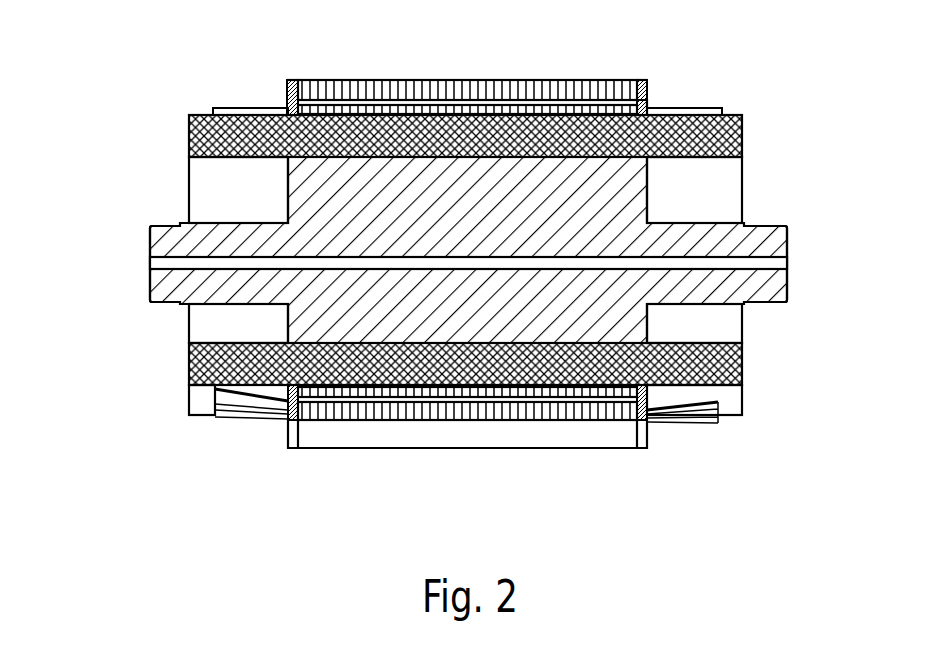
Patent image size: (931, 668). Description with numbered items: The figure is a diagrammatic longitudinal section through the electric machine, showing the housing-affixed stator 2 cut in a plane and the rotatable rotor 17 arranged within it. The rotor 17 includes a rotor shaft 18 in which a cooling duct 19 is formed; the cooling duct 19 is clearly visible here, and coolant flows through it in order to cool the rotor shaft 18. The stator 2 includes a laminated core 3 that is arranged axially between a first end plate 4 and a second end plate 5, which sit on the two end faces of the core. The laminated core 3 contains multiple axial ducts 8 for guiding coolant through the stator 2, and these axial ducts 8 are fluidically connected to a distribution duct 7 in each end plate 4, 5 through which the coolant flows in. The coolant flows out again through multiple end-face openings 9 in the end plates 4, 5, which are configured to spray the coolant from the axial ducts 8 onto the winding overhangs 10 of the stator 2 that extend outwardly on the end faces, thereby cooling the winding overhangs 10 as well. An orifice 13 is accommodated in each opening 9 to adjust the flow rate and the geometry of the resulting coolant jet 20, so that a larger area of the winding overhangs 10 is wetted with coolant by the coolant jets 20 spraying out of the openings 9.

The stator 2 is at (467, 270).
The laminated core 3 is at (467, 270).
The first end plate 4 is at (292, 81).
The second end plate 5 is at (646, 82).
The distribution duct 7 is at (286, 82).
The axial ducts 8 is at (368, 97).
The end-face openings 9 is at (653, 107).
The winding overhangs 10 is at (205, 134).
The orifice 13 is at (643, 104).
The rotor 17 is at (315, 302).
The rotor shaft 18 is at (168, 283).
The cooling duct 19 is at (166, 263).
The coolant jet 20 is at (275, 106).